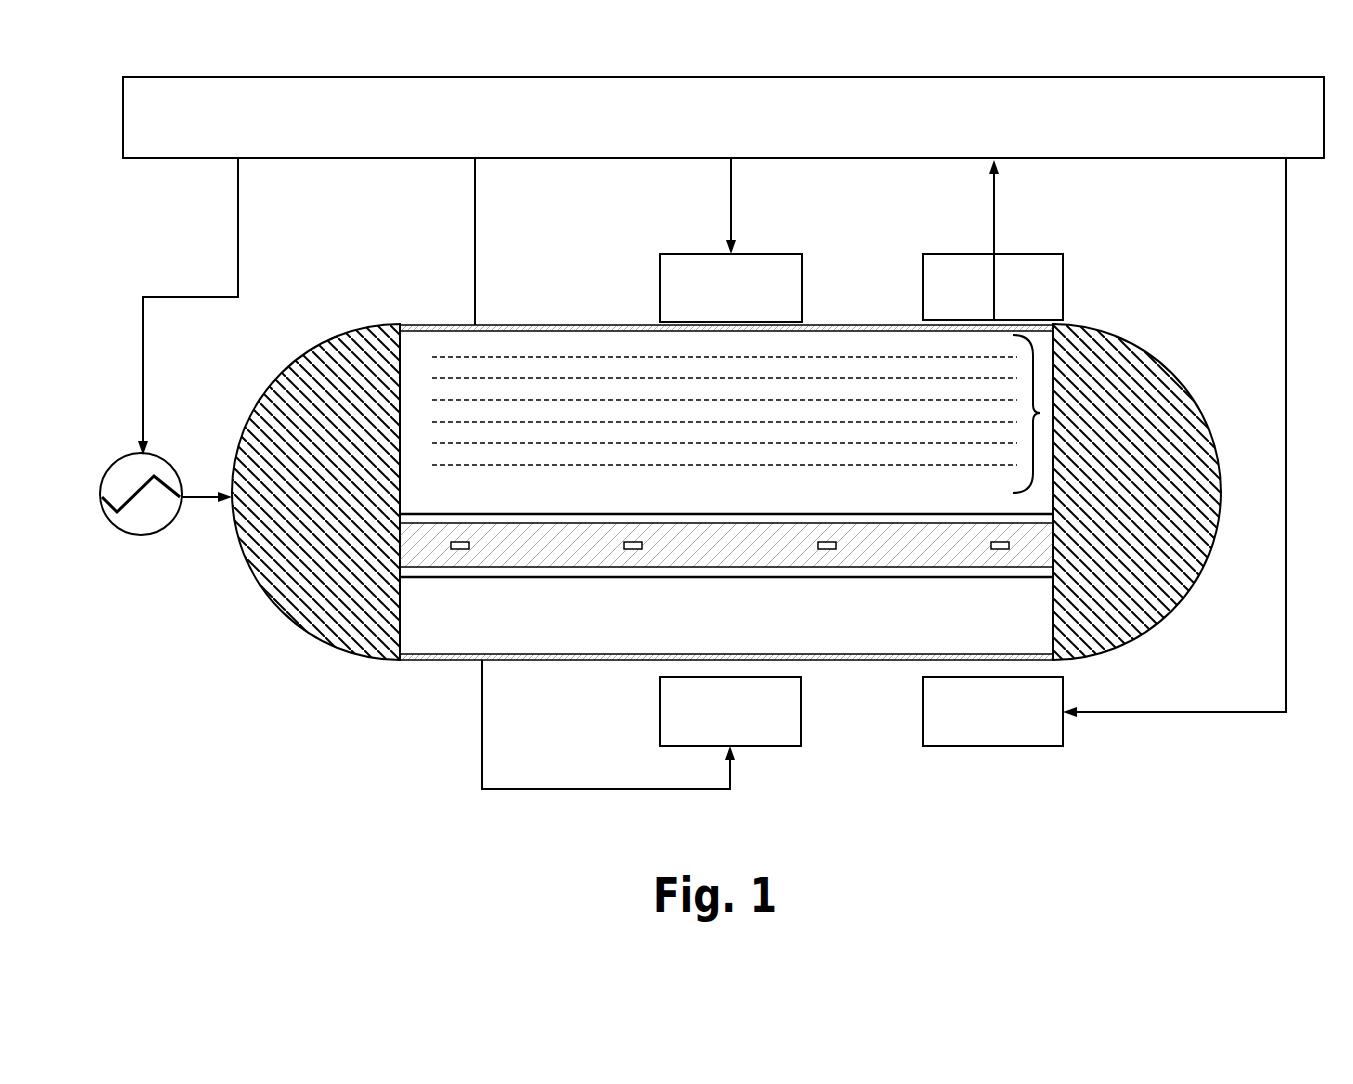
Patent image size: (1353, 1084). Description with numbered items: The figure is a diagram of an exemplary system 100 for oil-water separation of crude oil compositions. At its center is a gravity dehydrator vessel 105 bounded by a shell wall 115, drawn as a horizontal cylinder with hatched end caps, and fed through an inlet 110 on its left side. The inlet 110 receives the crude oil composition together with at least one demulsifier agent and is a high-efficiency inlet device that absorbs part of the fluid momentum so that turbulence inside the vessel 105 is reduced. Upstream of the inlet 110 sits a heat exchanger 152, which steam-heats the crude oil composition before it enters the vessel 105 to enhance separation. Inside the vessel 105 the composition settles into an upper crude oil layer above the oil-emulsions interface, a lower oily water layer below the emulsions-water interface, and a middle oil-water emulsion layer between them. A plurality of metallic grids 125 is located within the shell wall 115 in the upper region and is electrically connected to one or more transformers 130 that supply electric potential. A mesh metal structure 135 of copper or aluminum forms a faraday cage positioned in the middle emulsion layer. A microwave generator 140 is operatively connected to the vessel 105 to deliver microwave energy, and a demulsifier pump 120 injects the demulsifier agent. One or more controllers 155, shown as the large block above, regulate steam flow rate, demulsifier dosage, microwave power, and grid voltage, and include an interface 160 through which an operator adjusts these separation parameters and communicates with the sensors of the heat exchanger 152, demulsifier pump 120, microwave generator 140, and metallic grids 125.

The system 100 is at (699, 455).
The gravity dehydrator vessel 105 is at (263, 592).
The inlet 110 is at (193, 493).
The shell wall 115 is at (448, 659).
The demulsifier pump 120 is at (1030, 748).
The metallic grids 125 is at (1040, 413).
The transformers 130 is at (777, 252).
The mesh metal structure 135 is at (938, 567).
The microwave generator 140 is at (767, 748).
The heat exchanger 152 is at (125, 533).
The controllers 155 is at (135, 160).
The interface 160 is at (1033, 253).